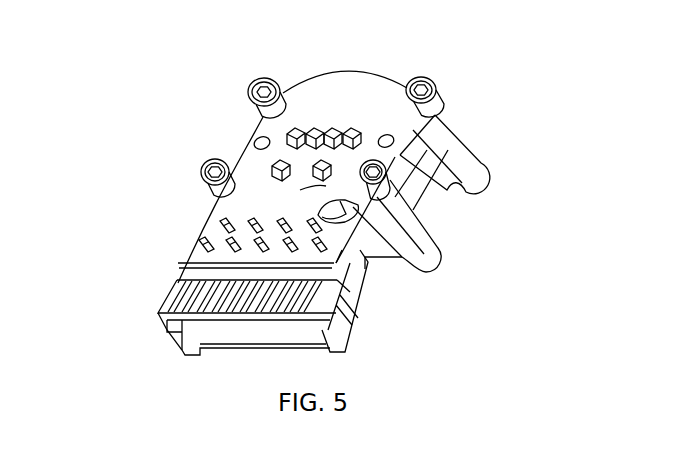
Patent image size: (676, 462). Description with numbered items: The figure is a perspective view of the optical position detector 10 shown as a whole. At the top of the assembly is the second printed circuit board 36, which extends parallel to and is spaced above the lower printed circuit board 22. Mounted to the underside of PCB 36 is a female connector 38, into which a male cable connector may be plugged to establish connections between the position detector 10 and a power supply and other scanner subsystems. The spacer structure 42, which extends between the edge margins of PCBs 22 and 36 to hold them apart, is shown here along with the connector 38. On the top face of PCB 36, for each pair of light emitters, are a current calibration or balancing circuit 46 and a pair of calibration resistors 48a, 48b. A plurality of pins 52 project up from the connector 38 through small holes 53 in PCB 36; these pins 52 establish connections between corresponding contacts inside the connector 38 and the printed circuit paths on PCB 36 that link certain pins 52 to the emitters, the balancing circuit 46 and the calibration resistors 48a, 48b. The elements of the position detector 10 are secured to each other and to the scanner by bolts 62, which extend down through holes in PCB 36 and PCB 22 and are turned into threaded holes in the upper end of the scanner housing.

The optical position detector 10 is at (184, 74).
The printed circuit board 22 is at (437, 206).
The second printed circuit board 36 is at (373, 82).
The female connector 38 is at (345, 307).
The spacer structure 42 is at (432, 183).
The current calibration or balancing circuit 46 is at (322, 184).
The calibration resistor 48a is at (334, 127).
The calibration resistor 48b is at (318, 162).
The pins 52 is at (200, 248).
The holes 53 is at (234, 251).
The bolts 62 is at (250, 86).